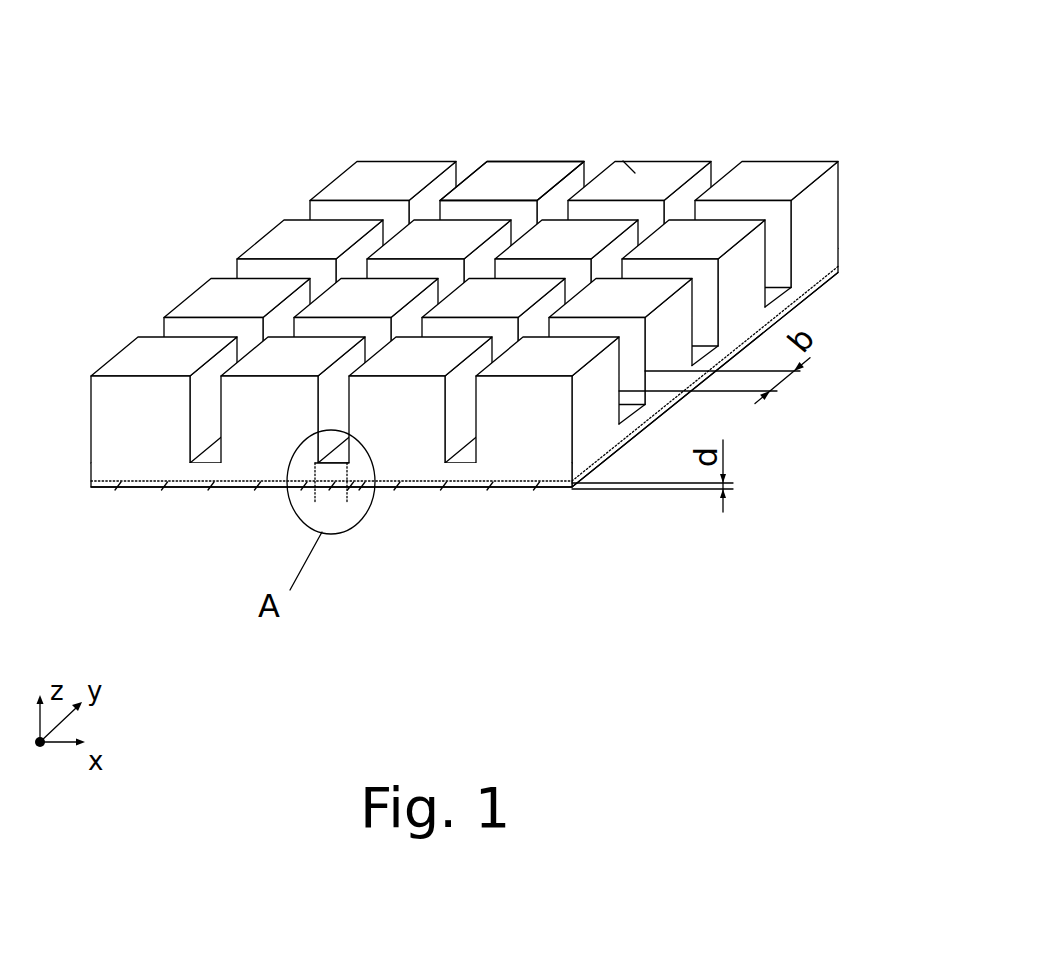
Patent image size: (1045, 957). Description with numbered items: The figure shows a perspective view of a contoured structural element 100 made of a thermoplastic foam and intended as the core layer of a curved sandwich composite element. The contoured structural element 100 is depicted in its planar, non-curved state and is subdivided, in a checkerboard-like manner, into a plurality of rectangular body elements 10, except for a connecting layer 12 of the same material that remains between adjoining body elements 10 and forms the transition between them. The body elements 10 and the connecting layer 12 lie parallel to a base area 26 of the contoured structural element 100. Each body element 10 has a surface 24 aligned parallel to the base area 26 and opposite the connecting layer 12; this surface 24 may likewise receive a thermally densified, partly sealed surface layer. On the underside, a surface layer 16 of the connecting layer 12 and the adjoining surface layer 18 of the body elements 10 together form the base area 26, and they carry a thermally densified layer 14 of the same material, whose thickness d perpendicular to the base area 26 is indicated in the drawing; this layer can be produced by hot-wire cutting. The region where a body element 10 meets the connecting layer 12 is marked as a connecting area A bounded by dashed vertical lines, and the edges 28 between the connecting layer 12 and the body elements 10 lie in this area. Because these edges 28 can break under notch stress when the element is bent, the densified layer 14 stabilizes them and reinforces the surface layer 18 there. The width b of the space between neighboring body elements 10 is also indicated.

The contoured structural element 100 is at (300, 107).
The body elements 10 is at (507, 168).
The surface of body elements 24 is at (635, 173).
The connecting layer 12 is at (308, 498).
The base area 26 is at (238, 490).
The thermally densified layer 14 is at (502, 489).
The surface layer of connecting layer 16 is at (332, 492).
The surface layer of body elements 18 is at (362, 492).
The edges 28 is at (315, 463).